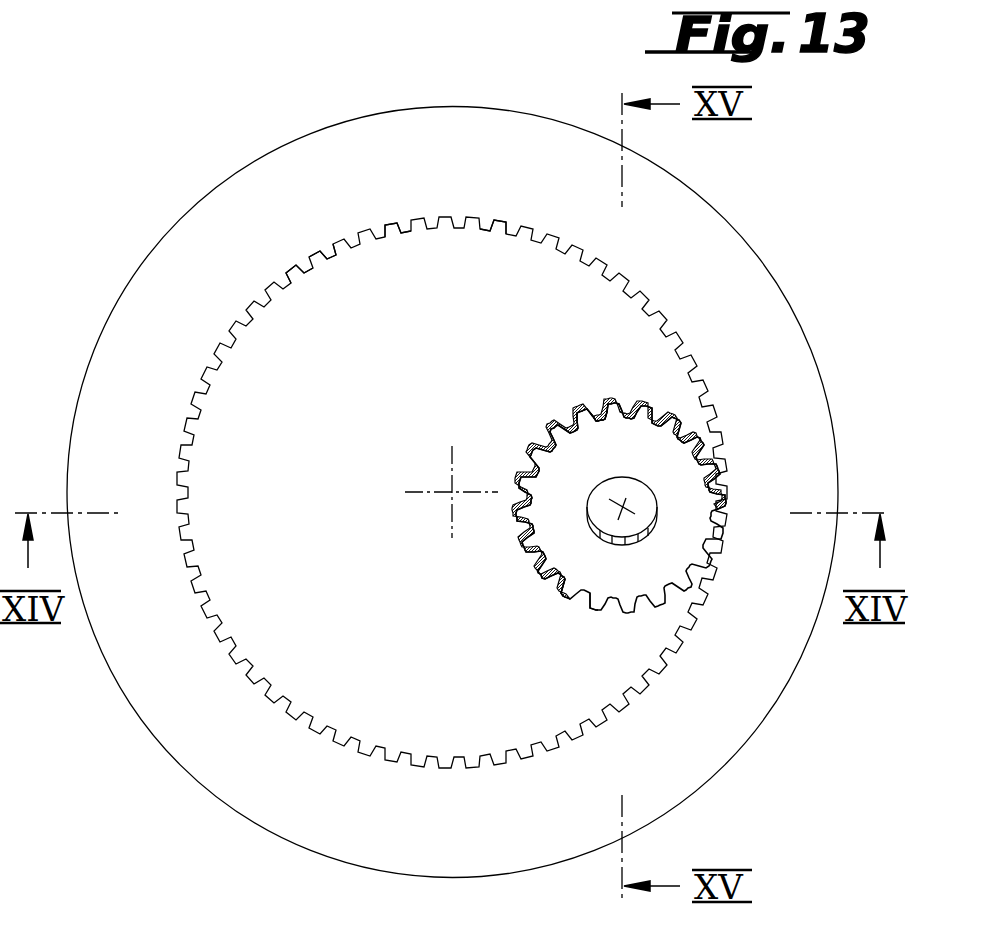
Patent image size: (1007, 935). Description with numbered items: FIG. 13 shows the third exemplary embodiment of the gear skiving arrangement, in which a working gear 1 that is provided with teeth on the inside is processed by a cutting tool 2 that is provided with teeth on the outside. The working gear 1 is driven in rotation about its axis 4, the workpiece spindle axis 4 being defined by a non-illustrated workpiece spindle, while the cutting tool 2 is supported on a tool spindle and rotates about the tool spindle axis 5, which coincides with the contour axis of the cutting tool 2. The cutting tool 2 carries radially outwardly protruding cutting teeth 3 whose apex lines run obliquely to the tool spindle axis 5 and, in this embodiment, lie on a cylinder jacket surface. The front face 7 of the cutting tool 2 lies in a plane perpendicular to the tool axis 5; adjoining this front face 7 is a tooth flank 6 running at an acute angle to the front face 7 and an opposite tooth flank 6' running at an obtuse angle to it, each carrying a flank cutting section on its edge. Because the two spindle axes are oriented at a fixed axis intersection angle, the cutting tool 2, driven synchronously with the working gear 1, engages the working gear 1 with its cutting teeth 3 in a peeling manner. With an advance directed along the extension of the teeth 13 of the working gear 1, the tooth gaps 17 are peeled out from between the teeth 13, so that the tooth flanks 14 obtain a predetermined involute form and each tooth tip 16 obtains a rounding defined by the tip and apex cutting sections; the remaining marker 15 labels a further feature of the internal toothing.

The working gear 1 is at (740, 208).
The cutting tool 2 is at (658, 452).
The cutting teeth 3 is at (624, 380).
The workpiece spindle axis 4 is at (452, 492).
The tool spindle axis 5 is at (622, 507).
The tooth flank 6 is at (566, 627).
The tooth flank 6' is at (605, 636).
The front face 7 is at (602, 420).
The teeth 13 is at (455, 218).
The tooth flanks 14 is at (496, 220).
The tooth tip 15 is at (392, 224).
The tooth tip 16 is at (330, 257).
The tooth gaps 17 is at (293, 271).